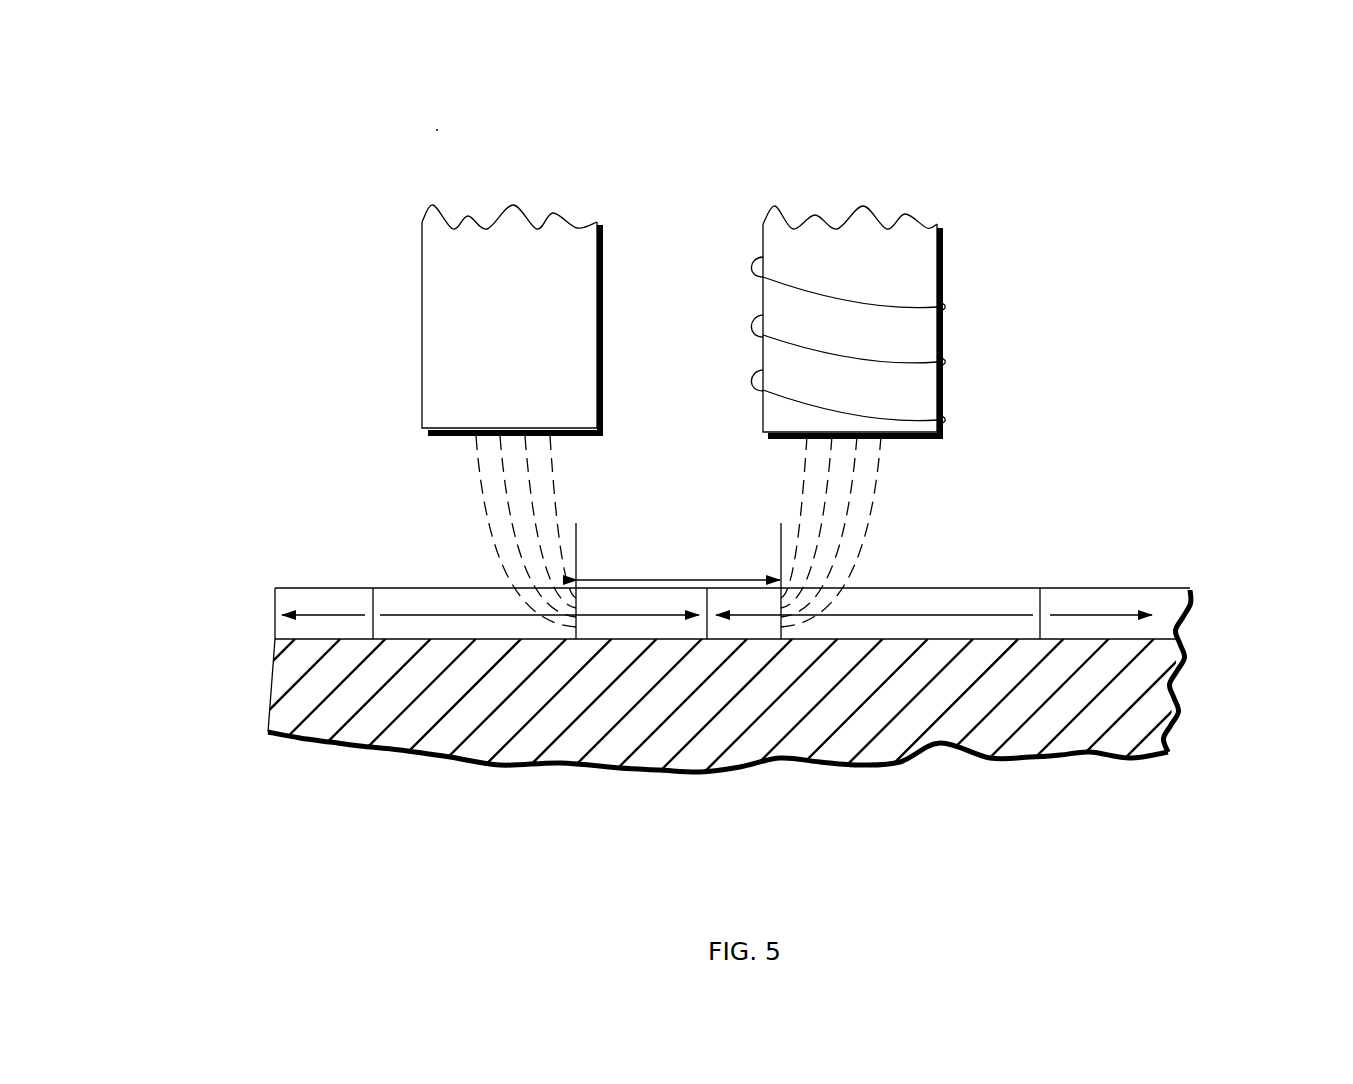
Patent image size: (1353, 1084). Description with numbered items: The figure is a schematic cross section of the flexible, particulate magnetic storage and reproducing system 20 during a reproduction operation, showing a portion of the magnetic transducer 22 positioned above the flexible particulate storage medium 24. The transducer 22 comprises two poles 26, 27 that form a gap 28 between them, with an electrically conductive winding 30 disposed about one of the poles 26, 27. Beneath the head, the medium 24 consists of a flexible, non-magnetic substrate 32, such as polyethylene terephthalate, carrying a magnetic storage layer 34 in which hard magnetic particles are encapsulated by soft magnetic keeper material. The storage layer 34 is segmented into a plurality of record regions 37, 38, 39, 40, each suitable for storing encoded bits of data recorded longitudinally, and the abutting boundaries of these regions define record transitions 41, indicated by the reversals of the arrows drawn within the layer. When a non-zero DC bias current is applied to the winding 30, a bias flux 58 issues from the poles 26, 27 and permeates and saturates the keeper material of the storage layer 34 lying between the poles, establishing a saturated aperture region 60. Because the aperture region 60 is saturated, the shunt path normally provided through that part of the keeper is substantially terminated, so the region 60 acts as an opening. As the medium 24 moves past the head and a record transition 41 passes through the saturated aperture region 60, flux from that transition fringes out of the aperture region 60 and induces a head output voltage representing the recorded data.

The flexible, particulate magnetic storage and reproducing system 20 is at (905, 150).
The magnetic transducer 22 is at (950, 263).
The flexible particulate storage medium 24 is at (1215, 572).
The pole 26 is at (432, 437).
The pole 27 is at (920, 440).
The gap 28 is at (680, 371).
The electrically conductive winding 30 is at (950, 362).
The flexible substrate 32 is at (527, 743).
The magnetic storage layer 34 is at (1175, 628).
The record region 37 is at (285, 622).
The record region 38 is at (418, 627).
The record region 39 is at (745, 627).
The record region 40 is at (1094, 628).
The record transition 41 is at (282, 598).
The bias flux 58 is at (574, 481).
The saturated aperture region 60 is at (733, 540).